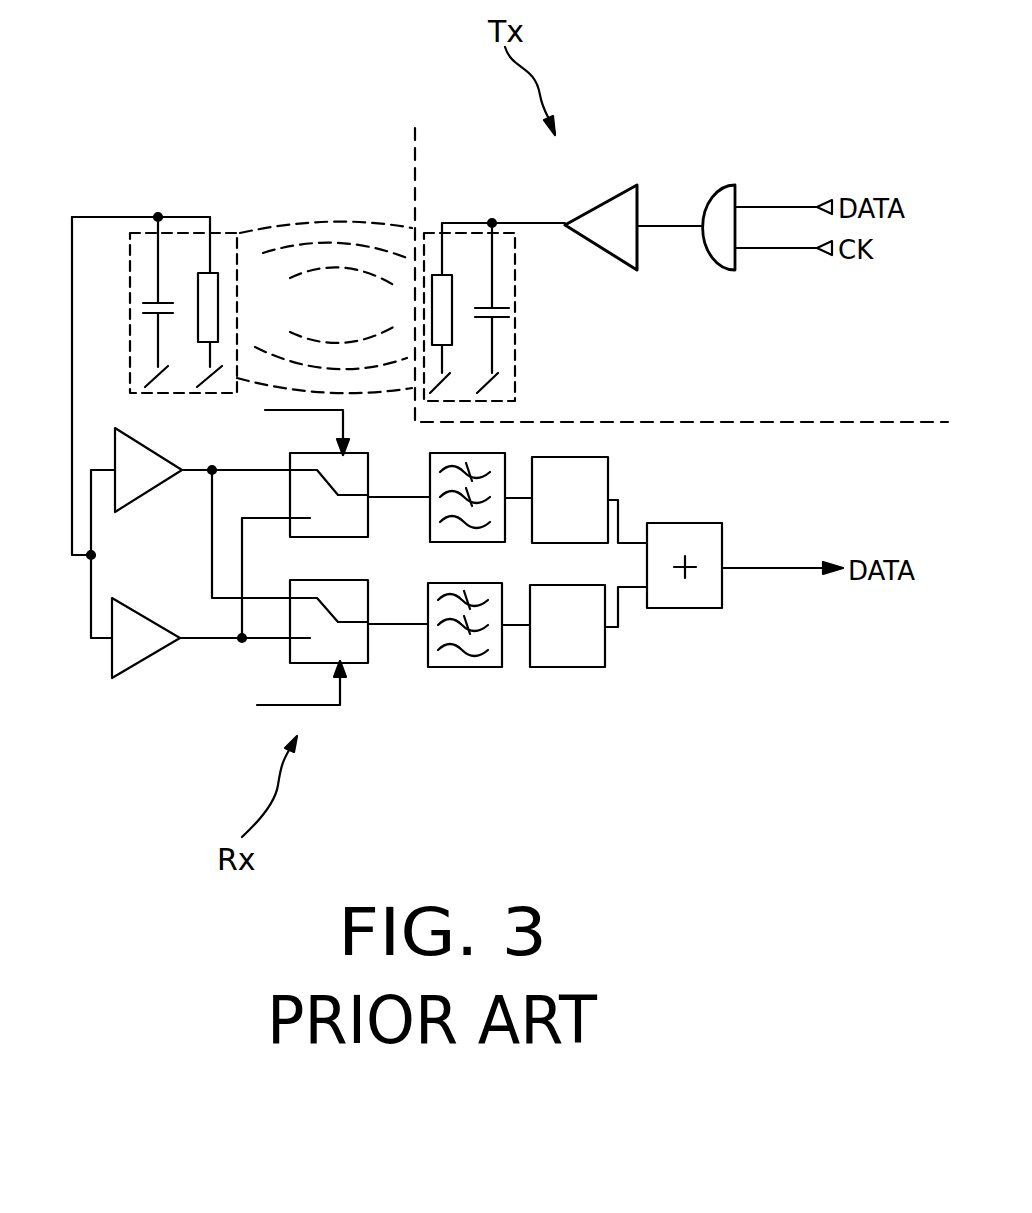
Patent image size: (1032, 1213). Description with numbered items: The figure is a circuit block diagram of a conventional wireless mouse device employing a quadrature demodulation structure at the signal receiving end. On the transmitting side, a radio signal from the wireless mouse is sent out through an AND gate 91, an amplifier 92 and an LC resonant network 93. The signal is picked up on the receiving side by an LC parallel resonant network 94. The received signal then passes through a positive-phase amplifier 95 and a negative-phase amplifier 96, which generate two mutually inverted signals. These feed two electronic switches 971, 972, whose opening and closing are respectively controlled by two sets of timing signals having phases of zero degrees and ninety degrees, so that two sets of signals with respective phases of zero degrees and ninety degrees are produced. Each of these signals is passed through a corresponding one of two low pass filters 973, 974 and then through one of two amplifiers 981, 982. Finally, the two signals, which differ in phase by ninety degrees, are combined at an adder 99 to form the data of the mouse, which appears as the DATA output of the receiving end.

The AND gate 91 is at (722, 253).
The amplifier 92 is at (613, 220).
The LC resonant network 93 is at (507, 332).
The LC parallel resonant network 94 is at (190, 238).
The positive-phase amplifier 95 is at (157, 485).
The negative-phase amplifier 96 is at (132, 658).
The electronic switch 971 is at (305, 457).
The electronic switch 972 is at (353, 657).
The low pass filter 973 is at (492, 463).
The low pass filter 974 is at (472, 662).
The amplifier 981 is at (597, 472).
The amplifier 982 is at (587, 662).
The adder 99 is at (705, 600).